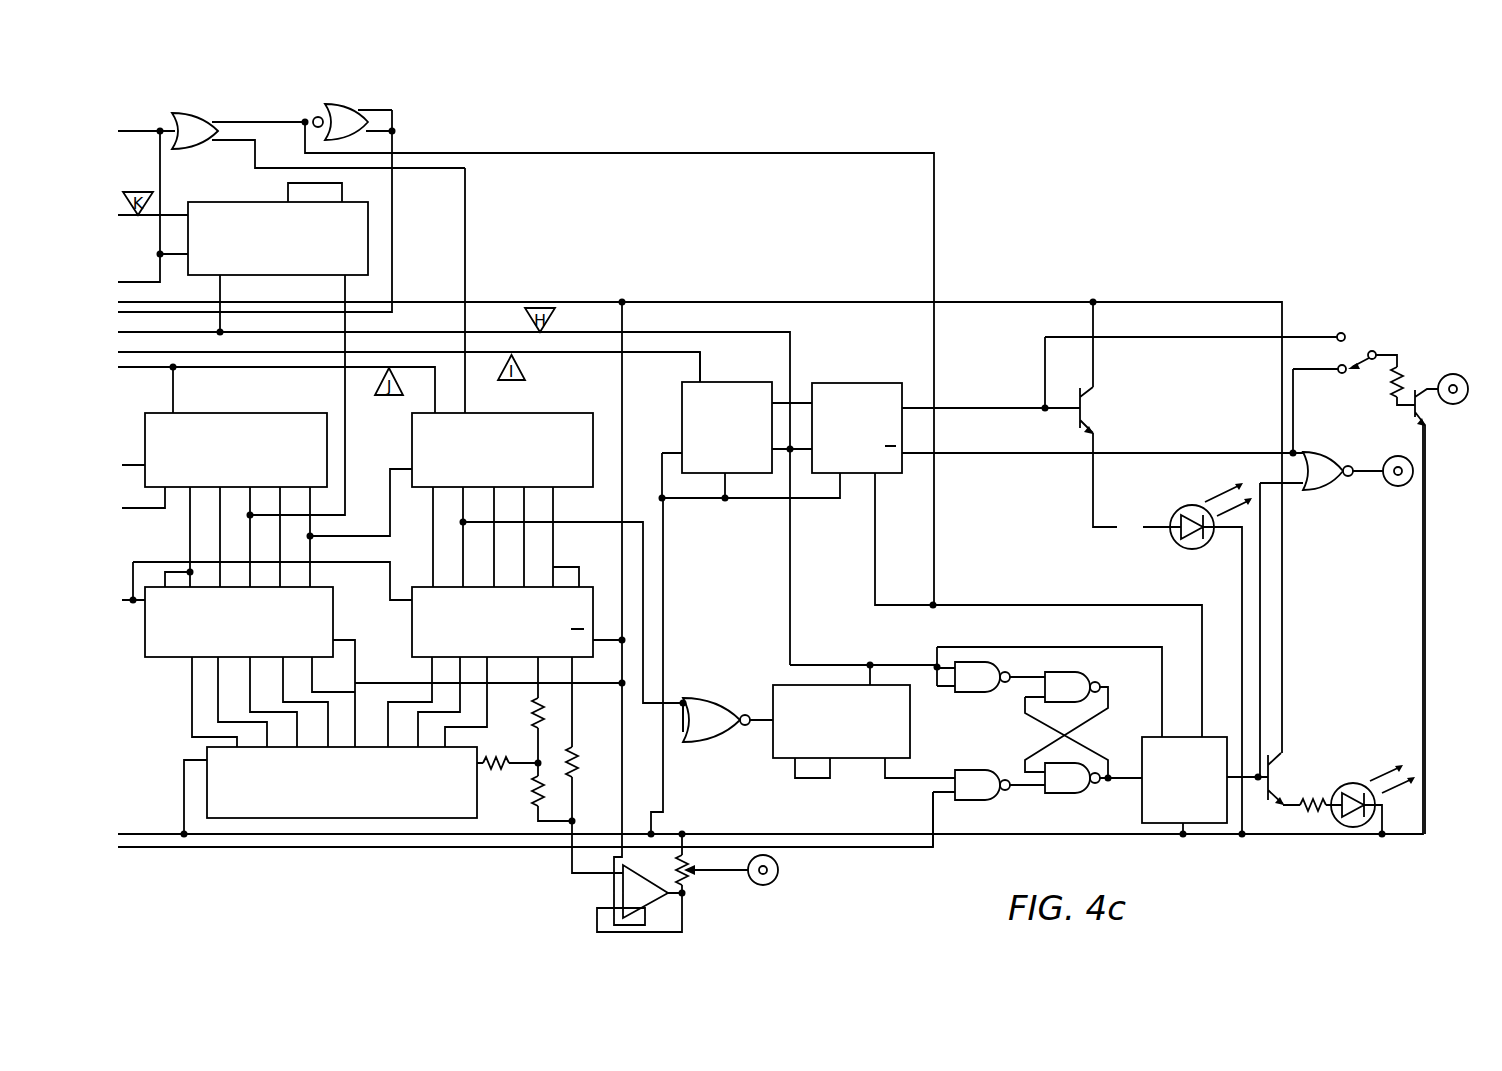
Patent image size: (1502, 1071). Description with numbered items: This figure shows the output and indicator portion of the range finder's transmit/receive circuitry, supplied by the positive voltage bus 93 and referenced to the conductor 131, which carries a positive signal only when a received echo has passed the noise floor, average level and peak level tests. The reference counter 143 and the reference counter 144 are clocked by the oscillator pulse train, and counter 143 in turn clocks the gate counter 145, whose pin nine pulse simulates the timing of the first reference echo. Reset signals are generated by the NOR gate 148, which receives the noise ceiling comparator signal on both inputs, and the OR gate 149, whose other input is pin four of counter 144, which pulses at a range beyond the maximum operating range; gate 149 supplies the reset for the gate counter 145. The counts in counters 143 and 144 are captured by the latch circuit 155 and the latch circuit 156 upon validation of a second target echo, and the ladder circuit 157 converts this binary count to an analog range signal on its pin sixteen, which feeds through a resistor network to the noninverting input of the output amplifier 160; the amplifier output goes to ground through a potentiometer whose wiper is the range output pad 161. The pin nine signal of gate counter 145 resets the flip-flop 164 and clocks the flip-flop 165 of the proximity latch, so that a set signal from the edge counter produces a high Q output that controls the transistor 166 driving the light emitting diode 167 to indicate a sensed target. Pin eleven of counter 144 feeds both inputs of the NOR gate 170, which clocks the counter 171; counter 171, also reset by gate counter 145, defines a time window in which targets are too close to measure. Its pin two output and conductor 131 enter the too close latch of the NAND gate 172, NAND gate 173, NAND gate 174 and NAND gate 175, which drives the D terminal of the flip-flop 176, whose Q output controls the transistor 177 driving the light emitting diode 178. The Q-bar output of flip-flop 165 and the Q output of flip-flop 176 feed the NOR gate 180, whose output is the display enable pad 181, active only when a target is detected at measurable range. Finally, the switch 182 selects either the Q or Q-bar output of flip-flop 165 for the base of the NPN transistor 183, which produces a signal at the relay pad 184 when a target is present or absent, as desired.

The positive voltage bus 93 is at (720, 302).
The conductor 131 is at (270, 847).
The reference counter 143 is at (233, 410).
The reference counter 144 is at (515, 412).
The gate counter 145 is at (368, 241).
The NOR gate 148 is at (350, 104).
The OR gate 149 is at (186, 107).
The latch circuit 155 is at (173, 660).
The latch circuit 156 is at (593, 618).
The ladder circuit 157 is at (207, 797).
The output amplifier 160 is at (614, 893).
The range output pad 161 is at (779, 872).
The flip-flop 164 is at (722, 381).
The flip-flop 165 is at (845, 381).
The transistor 166 is at (1085, 410).
The light emitting diode 167 is at (1193, 503).
The NOR gate 170 is at (712, 696).
The counter 171 is at (910, 725).
The NAND gate 172 is at (968, 770).
The NAND gate 173 is at (985, 661).
The NAND gate 174 is at (1065, 799).
The NAND gate 175 is at (1078, 672).
The flip-flop 176 is at (1140, 815).
The transistor 177 is at (1275, 775).
The light emitting diode 178 is at (1362, 778).
The NOR gate 180 is at (1318, 452).
The display enable pad 181 is at (1400, 456).
The switch 182 is at (1375, 350).
The NPN transistor 183 is at (1416, 390).
The relay pad 184 is at (1455, 373).